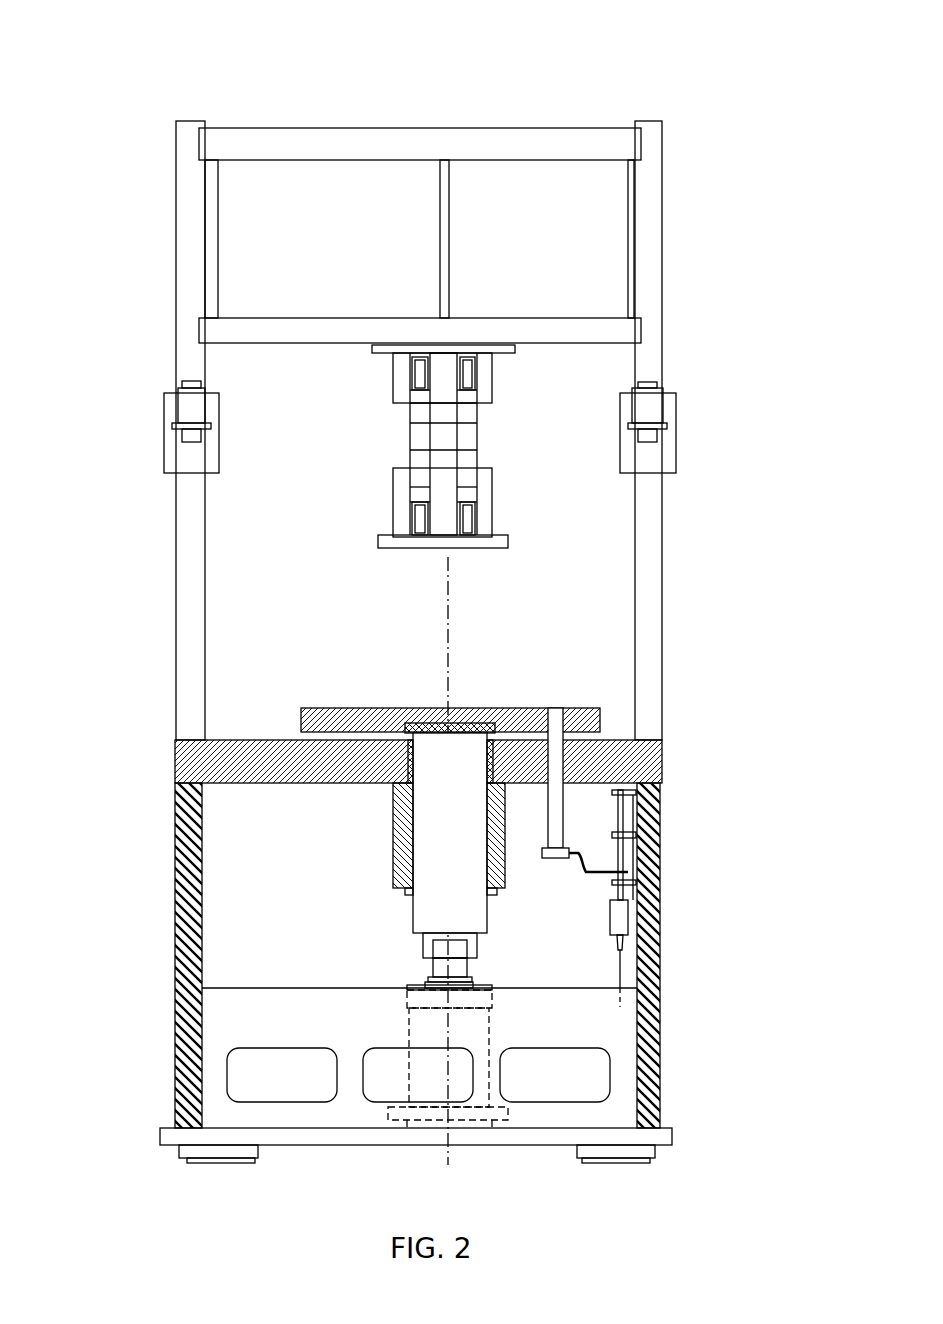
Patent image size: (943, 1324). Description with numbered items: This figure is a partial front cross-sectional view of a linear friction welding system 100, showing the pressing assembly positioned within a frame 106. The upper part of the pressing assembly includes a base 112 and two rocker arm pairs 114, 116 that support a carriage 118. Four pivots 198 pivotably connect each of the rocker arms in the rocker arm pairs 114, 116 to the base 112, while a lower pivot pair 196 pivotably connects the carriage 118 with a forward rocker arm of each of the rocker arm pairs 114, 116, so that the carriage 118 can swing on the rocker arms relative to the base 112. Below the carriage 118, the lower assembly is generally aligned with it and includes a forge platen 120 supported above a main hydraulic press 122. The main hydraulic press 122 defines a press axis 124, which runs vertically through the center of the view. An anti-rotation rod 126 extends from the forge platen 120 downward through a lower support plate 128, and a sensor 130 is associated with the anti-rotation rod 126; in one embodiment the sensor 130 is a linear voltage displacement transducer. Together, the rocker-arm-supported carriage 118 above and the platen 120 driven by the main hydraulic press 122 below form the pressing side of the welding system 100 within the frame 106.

The linear friction welding system 100 is at (96, 106).
The frame 106 is at (662, 177).
The base 112 is at (232, 343).
The rocker arm pair 114 is at (474, 437).
The rocker arm pair 116 is at (412, 432).
The carriage 118 is at (380, 545).
The forge platen 120 is at (347, 708).
The main hydraulic press 122 is at (440, 968).
The press axis 124 is at (448, 652).
The anti-rotation rod 126 is at (562, 795).
The lower support plate 128 is at (618, 738).
The sensor 130 is at (628, 855).
The lower pivot pair 196 is at (414, 508).
The pivots 198 is at (415, 370).